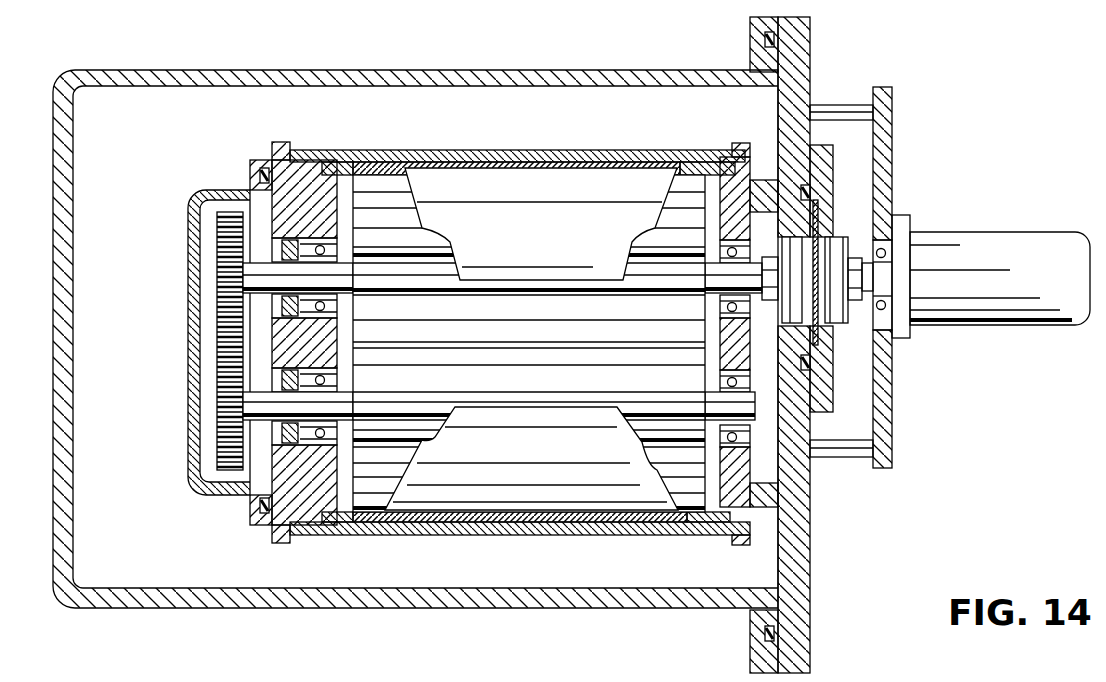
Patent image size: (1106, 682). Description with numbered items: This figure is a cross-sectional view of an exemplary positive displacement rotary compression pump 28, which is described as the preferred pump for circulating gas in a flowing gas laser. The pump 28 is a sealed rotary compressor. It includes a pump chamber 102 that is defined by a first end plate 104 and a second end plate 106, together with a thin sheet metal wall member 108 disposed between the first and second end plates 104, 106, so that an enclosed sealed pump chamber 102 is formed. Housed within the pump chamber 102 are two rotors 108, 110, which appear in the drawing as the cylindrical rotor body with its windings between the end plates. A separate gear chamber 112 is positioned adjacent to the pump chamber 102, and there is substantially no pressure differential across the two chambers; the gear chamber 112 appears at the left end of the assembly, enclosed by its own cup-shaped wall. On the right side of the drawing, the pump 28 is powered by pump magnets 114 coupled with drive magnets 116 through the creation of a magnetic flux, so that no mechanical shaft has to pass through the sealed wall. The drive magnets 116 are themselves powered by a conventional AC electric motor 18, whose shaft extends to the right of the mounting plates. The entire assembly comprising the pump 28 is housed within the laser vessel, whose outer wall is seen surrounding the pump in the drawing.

The pump 28 is at (970, 140).
The AC electric motor 18 is at (1050, 232).
The pump chamber 102 is at (388, 490).
The first end plate 104 is at (743, 468).
The second end plate 106 is at (282, 504).
The rotor 108 is at (395, 200).
The rotor 110 is at (663, 407).
The gear chamber 112 is at (207, 328).
The pump magnet 114 is at (883, 213).
The drive magnet 116 is at (878, 360).